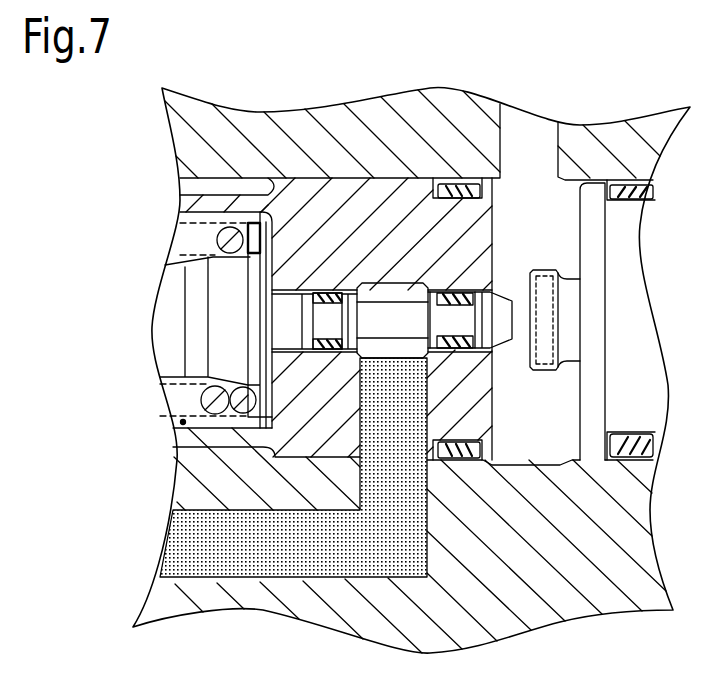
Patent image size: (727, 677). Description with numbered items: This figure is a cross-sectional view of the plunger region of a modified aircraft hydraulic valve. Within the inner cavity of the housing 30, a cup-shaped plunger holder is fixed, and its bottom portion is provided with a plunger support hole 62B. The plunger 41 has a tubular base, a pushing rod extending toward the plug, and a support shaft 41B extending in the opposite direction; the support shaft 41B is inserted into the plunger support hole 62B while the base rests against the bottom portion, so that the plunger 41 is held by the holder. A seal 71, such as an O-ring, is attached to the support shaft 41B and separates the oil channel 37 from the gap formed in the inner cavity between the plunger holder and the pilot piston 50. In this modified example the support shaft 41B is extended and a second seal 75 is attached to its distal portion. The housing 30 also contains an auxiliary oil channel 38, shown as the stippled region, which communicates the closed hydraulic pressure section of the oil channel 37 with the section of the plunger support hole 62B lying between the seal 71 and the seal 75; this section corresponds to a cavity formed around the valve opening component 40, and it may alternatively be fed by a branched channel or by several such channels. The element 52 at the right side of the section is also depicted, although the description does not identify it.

The housing 30 is at (286, 111).
The oil channel 37 is at (182, 422).
The auxiliary oil channel 38 is at (268, 575).
The valve opening component 40 is at (157, 242).
The plunger 41 is at (276, 228).
The support shaft 41B is at (530, 273).
The pilot piston 50 is at (605, 477).
The shaft 52 is at (630, 252).
The plunger support hole 62B is at (396, 283).
The seal 71 is at (327, 292).
The seal 75 is at (457, 290).